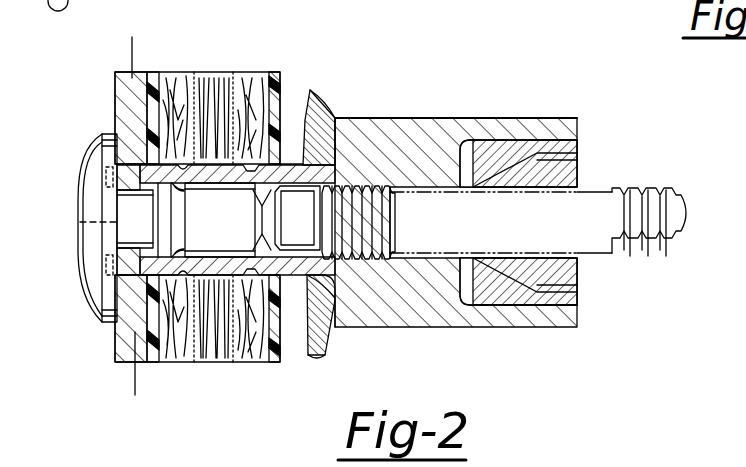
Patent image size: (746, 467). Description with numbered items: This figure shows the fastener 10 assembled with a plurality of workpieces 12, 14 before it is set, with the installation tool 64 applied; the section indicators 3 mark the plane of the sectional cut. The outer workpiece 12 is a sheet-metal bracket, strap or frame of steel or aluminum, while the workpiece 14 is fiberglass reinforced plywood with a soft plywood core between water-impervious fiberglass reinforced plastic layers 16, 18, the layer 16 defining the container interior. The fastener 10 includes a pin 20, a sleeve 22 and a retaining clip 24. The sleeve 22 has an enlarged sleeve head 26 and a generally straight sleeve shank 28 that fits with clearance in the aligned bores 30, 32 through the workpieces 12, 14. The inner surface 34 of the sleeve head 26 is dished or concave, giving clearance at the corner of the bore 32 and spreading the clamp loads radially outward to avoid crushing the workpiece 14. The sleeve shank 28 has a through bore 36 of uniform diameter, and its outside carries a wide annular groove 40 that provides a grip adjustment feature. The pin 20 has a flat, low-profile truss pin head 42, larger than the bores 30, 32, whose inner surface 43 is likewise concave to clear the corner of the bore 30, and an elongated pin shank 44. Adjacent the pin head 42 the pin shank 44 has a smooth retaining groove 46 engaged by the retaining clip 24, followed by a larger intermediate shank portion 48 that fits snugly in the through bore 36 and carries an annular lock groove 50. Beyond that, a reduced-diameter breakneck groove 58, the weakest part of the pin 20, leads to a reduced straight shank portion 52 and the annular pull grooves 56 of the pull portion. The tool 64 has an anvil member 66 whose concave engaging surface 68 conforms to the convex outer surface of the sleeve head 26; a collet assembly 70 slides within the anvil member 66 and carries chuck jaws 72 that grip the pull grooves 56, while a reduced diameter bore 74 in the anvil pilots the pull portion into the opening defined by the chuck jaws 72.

The section line 3- 3 is at (122, 50).
The fastener 10 is at (292, 86).
The workpiece 12 is at (138, 80).
The workpiece 14 is at (234, 72).
The fiberglass reinforced plastic layer 16 is at (274, 68).
The fiberglass reinforced plastic layer 18 is at (190, 72).
The pin 20 is at (402, 236).
The sleeve 22 is at (292, 282).
The retaining clip 24 is at (133, 156).
The sleeve head 26 is at (324, 345).
The sleeve shank 28 is at (238, 262).
The bore 30 is at (210, 72).
The bore 32 is at (200, 335).
The inner surface 34 is at (318, 130).
The through bore 36 is at (237, 72).
The annular groove 40 is at (273, 162).
The pin head 42 is at (56, 9).
The inner surface 43 is at (117, 187).
The pin shank 44 is at (578, 200).
The retaining groove 46 is at (148, 233).
The intermediate shank portion 48 is at (256, 186).
The annular lock groove 50 is at (150, 300).
The straight shank portion 52 is at (306, 228).
The annular pull grooves 56 is at (392, 210).
The breakneck groove 58 is at (263, 350).
The tool 64 is at (488, 78).
The anvil member 66 is at (362, 120).
The engaging surface 68 is at (336, 297).
The collet assembly 70 is at (510, 148).
The chuck jaws 72 is at (567, 264).
The reduced diameter bore 74 is at (350, 183).